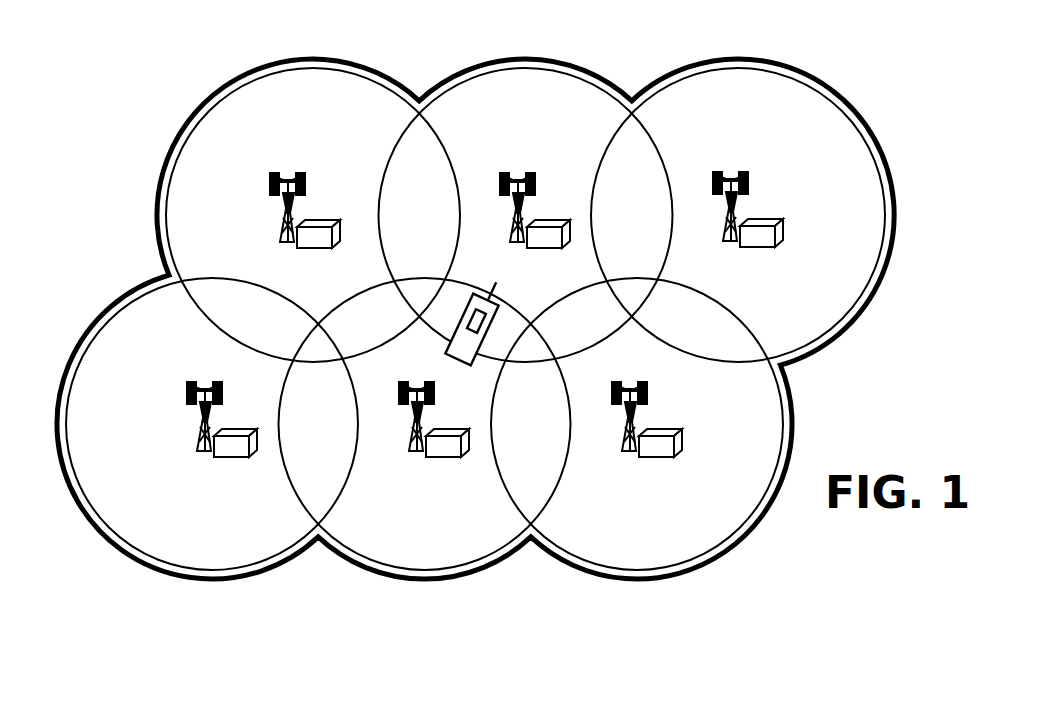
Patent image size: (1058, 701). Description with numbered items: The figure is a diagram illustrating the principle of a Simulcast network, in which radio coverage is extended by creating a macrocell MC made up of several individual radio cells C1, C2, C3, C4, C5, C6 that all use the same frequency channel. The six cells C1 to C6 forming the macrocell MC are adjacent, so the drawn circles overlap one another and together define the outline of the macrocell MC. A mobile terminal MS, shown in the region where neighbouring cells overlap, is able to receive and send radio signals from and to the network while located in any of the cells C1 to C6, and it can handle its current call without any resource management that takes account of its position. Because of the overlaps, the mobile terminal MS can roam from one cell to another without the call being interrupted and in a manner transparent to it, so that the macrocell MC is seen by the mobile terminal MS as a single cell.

The macrocell MC is at (162, 165).
The mobile terminal MS is at (458, 325).
The radio cell C1 is at (247, 112).
The radio cell C2 is at (218, 522).
The radio cell C3 is at (518, 110).
The radio cell C4 is at (433, 522).
The radio cell C5 is at (752, 108).
The radio cell C6 is at (665, 520).